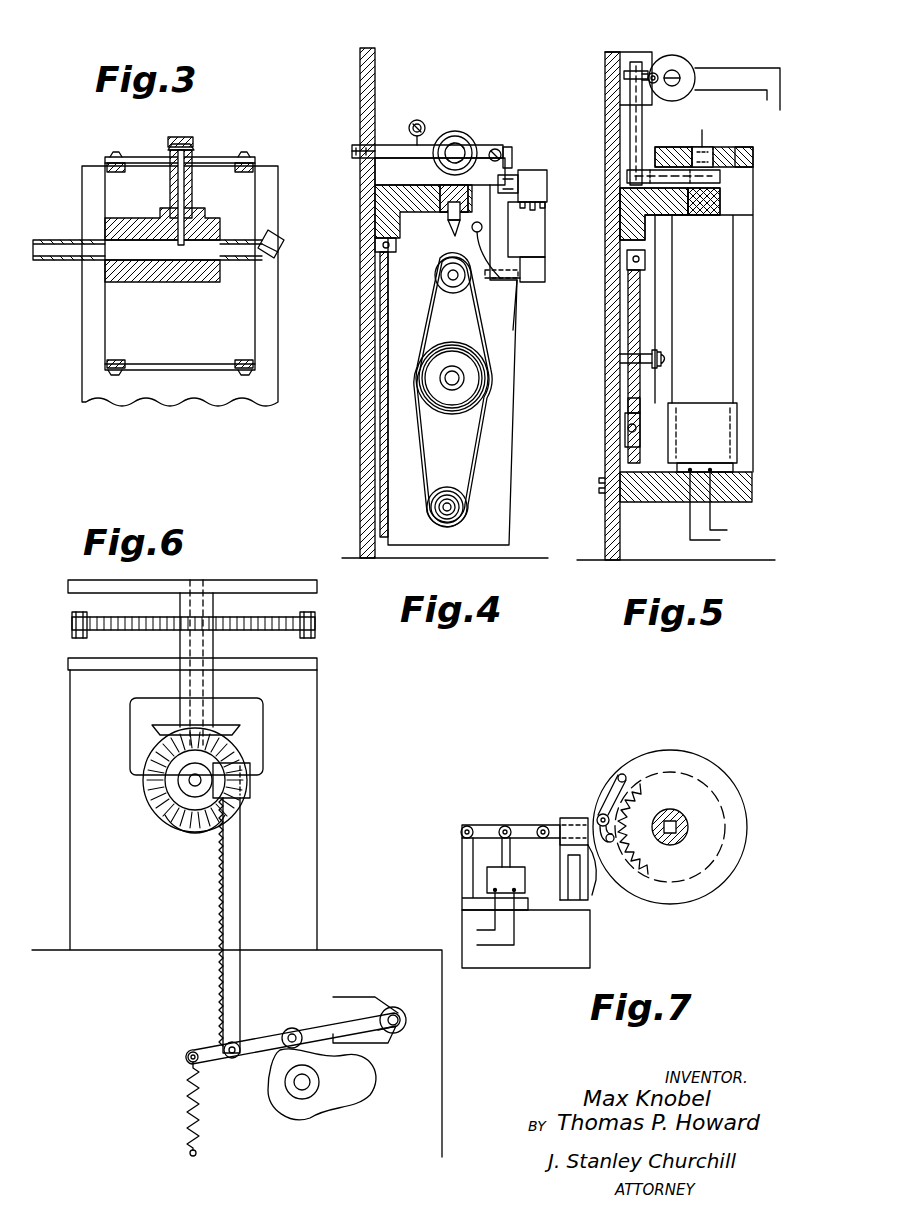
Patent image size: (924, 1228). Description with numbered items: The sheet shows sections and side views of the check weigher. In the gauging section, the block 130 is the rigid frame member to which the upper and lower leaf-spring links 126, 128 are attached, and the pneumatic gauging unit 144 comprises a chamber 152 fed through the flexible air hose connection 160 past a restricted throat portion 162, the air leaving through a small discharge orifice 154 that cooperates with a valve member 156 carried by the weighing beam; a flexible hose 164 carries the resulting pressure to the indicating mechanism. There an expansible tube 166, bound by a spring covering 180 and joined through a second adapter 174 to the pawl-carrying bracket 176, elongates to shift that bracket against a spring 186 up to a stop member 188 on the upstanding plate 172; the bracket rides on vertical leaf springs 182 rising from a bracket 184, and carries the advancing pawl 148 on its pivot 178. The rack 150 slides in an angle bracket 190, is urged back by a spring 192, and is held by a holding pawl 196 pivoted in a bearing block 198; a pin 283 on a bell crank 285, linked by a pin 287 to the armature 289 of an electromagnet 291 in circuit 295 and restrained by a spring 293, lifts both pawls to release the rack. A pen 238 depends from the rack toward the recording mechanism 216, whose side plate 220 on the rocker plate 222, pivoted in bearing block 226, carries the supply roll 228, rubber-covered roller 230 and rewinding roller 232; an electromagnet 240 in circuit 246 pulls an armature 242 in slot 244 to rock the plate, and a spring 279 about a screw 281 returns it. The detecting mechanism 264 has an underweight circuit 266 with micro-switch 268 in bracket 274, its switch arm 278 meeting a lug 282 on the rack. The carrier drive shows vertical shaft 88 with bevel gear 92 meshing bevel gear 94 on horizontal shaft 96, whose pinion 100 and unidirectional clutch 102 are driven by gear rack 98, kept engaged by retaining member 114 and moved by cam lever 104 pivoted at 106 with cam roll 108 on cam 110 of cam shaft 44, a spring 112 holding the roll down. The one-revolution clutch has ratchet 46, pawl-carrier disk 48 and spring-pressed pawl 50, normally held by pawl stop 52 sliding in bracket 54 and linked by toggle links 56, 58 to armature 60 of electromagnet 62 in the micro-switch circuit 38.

In FIG. 3, the block 130 is at (255, 315).
In FIG. 3, the pneumatic gauging unit 144 is at (152, 146).
In FIG. 3, the upper horizontal link 126 is at (113, 172).
In FIG. 3, the lower horizontal link 128 is at (244, 360).
In FIG. 3, the restricted throat portion 162 is at (135, 262).
In FIG. 3, the flexible air hose connection 160 is at (60, 263).
In FIG. 3, the flexible hose 164 is at (276, 247).
In FIG. 3, the chamber 152 is at (192, 185).
In FIG. 3, the discharge orifice 154 is at (190, 153).
In FIG. 3, the valve member 156 is at (183, 137).
In FIG. 4, the upstanding plate 172 is at (358, 96).
In FIG. 5, the upstanding plate 172 is at (603, 73).
In FIG. 4, the stop member 188 is at (395, 150).
In FIG. 4, the spring 186 is at (412, 120).
In FIG. 4, the spring covering 180 is at (447, 131).
In FIG. 4, the second adapter 174 is at (458, 136).
In FIG. 4, the expansible tube 166 is at (466, 143).
In FIG. 4, the vertical leaf springs 182 is at (410, 176).
In FIG. 5, the vertical leaf springs 182 is at (675, 274).
In FIG. 4, the pawl-carrying bracket 176 is at (496, 148).
In FIG. 5, the pawl-carrying bracket 176 is at (752, 151).
In FIG. 4, the lug 282 is at (508, 165).
In FIG. 4, the switch arm 278 is at (510, 175).
In FIG. 4, the underweight circuit 266 is at (549, 180).
In FIG. 4, the micro-switch 268 is at (553, 210).
In FIG. 4, the detecting mechanism 264 is at (546, 234).
In FIG. 4, the spring 192 is at (534, 282).
In FIG. 4, the bracket 274 is at (546, 264).
In FIG. 4, the angle bracket 190 is at (390, 200).
In FIG. 5, the angle bracket 190 is at (625, 220).
In FIG. 4, the rack 150 is at (451, 224).
In FIG. 5, the rack 150 is at (722, 202).
In FIG. 4, the pen 238 is at (482, 236).
In FIG. 4, the bearing block 226 is at (378, 247).
In FIG. 5, the bearing block 226 is at (628, 272).
In FIG. 4, the rocker plate 222 is at (385, 340).
In FIG. 5, the rocker plate 222 is at (629, 300).
In FIG. 4, the side plate 220 is at (505, 453).
In FIG. 4, the recording mechanism 216 is at (516, 335).
In FIG. 4, the rubber-covered roller 230 is at (455, 293).
In FIG. 4, the supply roll 228 is at (432, 316).
In FIG. 4, the rewinding roller 232 is at (440, 488).
In FIG. 5, the bell crank 285 is at (633, 110).
In FIG. 5, the pin 287 is at (628, 71).
In FIG. 5, the spring 293 is at (665, 57).
In FIG. 5, the electromagnet 291 is at (652, 72).
In FIG. 5, the armature 289 is at (676, 71).
In FIG. 5, the circuit 295 is at (746, 69).
In FIG. 5, the pivot 178 is at (737, 147).
In FIG. 5, the advancing pawl 148 is at (706, 147).
In FIG. 5, the bearing block 198 is at (675, 147).
In FIG. 5, the pin 283 is at (724, 178).
In FIG. 5, the holding pawl 196 is at (684, 216).
In FIG. 5, the spring 279 is at (660, 350).
In FIG. 5, the screw 281 is at (667, 362).
In FIG. 5, the slot 244 is at (630, 410).
In FIG. 5, the armature 242 is at (625, 420).
In FIG. 5, the electromagnet 240 is at (702, 440).
In FIG. 5, the bracket 184 is at (645, 500).
In FIG. 5, the circuit 246 is at (697, 540).
In FIG. 6, the vertical shaft 88 is at (196, 580).
In FIG. 6, the bevel gear 92 is at (240, 733).
In FIG. 6, the bevel gear 94 is at (144, 805).
In FIG. 6, the unidirectional clutch 102 is at (151, 734).
In FIG. 6, the horizontal shaft 96 is at (178, 778).
In FIG. 6, the pinion 100 is at (172, 820).
In FIG. 6, the retaining member 114 is at (252, 790).
In FIG. 6, the gear rack 98 is at (242, 891).
In FIG. 6, the cam lever 104 is at (262, 1042).
In FIG. 6, the cam roll 108 is at (296, 1028).
In FIG. 6, the pivot 106 is at (395, 1008).
In FIG. 6, the spring 112 is at (185, 1108).
In FIG. 6, the cam 110 is at (355, 1095).
In FIG. 6, the main cam shaft 44 is at (300, 1087).
In FIG. 7, the main cam shaft 44 is at (671, 843).
In FIG. 7, the pawl-carrier disk 48 is at (712, 768).
In FIG. 7, the ratchet 46 is at (650, 775).
In FIG. 7, the spring-pressed pawl 50 is at (606, 800).
In FIG. 7, the bracket 54 is at (575, 818).
In FIG. 7, the toggle link 56 is at (520, 825).
In FIG. 7, the toggle link 58 is at (478, 825).
In FIG. 7, the armature 60 is at (512, 855).
In FIG. 7, the electromagnet 62 is at (510, 886).
In FIG. 7, the micro-switch circuit 38 is at (504, 966).
In FIG. 7, the pawl stop 52 is at (597, 880).